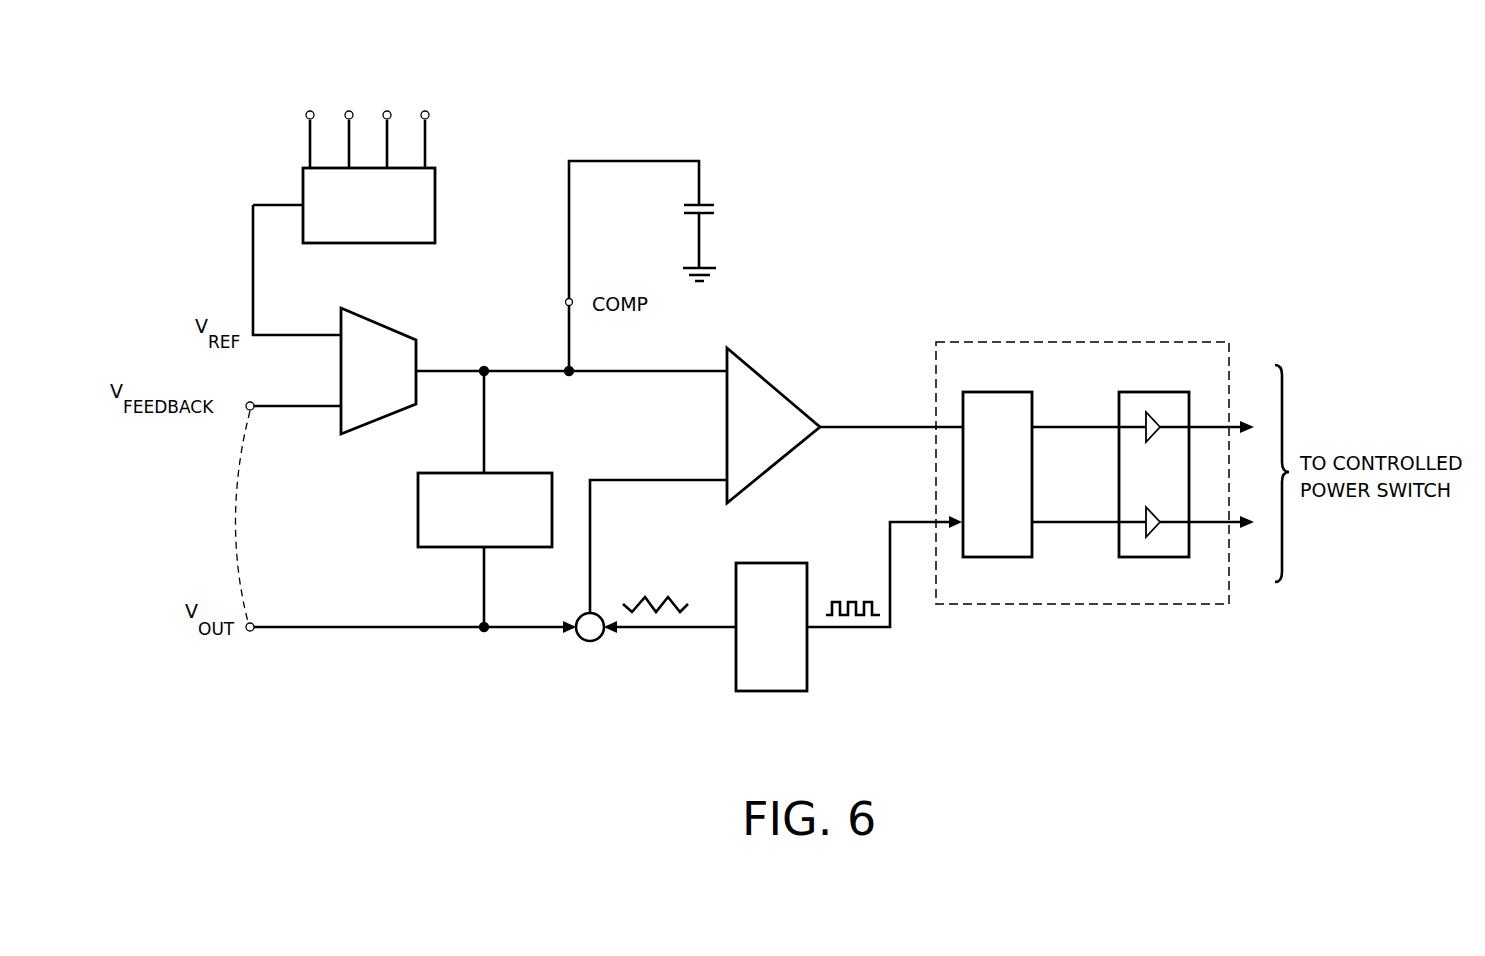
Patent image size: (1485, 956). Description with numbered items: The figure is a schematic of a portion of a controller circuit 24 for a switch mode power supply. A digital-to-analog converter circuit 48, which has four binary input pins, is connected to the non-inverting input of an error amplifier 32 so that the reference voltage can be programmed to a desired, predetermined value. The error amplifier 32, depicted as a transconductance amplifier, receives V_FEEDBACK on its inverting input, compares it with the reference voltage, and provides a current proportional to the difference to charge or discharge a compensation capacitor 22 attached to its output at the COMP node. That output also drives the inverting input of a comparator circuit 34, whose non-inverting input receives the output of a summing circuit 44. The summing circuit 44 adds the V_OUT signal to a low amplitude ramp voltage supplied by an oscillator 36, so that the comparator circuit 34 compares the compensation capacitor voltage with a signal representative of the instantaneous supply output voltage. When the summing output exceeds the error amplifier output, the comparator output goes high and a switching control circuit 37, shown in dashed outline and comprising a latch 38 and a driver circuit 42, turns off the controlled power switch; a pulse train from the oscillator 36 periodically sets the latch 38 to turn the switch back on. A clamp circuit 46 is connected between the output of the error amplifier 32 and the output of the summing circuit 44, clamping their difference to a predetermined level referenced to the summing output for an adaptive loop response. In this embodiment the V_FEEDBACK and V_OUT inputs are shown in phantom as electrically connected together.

The compensation capacitor 22 is at (704, 203).
The controller circuit 24 is at (893, 210).
The error amplifier 32 is at (375, 318).
The comparator circuit 34 is at (778, 388).
The oscillator 36 is at (780, 563).
The switching control circuit 37 is at (1055, 340).
The latch 38 is at (983, 390).
The driver circuit 42 is at (1137, 390).
The summing circuit 44 is at (596, 641).
The clamp circuit 46 is at (418, 518).
The digital-to-analog converter circuit 48 is at (435, 212).